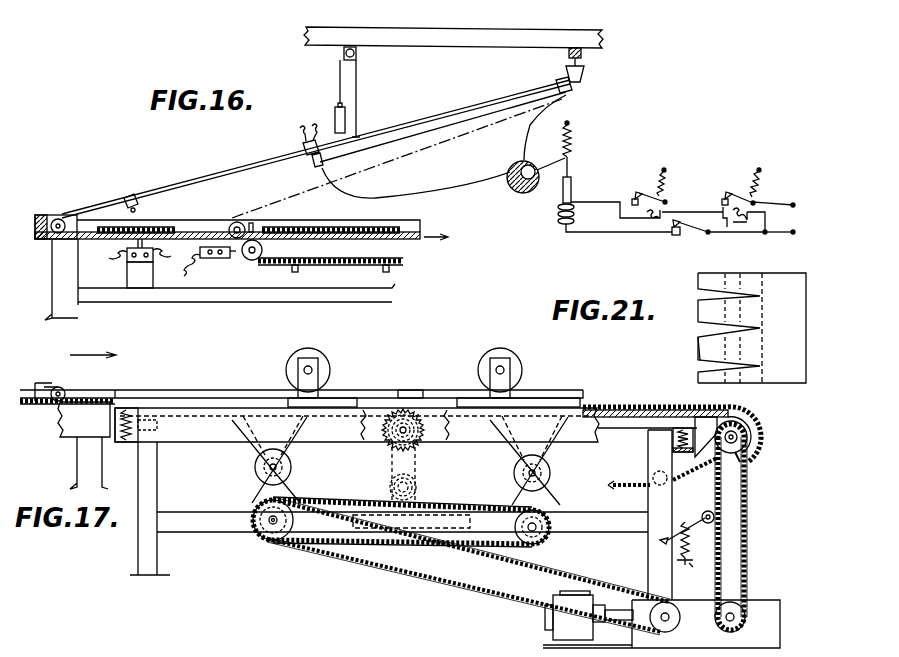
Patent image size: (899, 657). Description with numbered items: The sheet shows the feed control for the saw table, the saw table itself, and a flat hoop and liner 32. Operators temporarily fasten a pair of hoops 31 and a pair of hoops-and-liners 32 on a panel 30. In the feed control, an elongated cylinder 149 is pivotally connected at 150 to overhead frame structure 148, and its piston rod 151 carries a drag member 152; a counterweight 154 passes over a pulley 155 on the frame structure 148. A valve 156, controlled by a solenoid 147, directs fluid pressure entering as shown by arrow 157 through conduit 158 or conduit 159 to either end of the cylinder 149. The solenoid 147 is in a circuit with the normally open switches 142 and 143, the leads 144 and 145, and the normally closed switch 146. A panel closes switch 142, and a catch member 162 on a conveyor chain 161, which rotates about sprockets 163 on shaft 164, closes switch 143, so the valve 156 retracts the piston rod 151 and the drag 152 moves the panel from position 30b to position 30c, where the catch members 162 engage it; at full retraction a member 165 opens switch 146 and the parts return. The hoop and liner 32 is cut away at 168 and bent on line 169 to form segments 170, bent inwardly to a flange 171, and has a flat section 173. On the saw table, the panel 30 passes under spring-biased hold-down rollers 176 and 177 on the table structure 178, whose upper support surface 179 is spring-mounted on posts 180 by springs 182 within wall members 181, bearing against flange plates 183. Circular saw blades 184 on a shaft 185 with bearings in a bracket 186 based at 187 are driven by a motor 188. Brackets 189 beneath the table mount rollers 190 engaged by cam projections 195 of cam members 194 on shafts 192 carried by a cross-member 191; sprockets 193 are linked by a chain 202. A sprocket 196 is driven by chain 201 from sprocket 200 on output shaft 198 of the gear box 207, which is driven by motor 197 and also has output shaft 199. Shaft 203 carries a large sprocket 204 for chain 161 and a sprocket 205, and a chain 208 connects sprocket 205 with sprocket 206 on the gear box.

In FIG. 16, the overhead frame structure 148 is at (518, 40).
In FIG. 16, the pulley 155 is at (343, 50).
In FIG. 16, the counterweight 154 is at (334, 112).
In FIG. 16, the piston rod 151 is at (235, 172).
In FIG. 16, the pivotal connection 150 is at (577, 86).
In FIG. 16, the switch 146 is at (303, 147).
In FIG. 16, the elongated cylinder 149 is at (470, 108).
In FIG. 16, the conduit 159 is at (405, 192).
In FIG. 16, the conduit 158 is at (528, 140).
In FIG. 16, the valve 156 is at (517, 193).
In FIG. 16, the fluid pressure source arrow 157 is at (551, 203).
In FIG. 16, the solenoid 147 is at (562, 231).
In FIG. 16, the switch 143 is at (641, 191).
In FIG. 16, the switch 142 is at (728, 192).
In FIG. 16, the lead 144 is at (790, 205).
In FIG. 16, the lead 145 is at (765, 233).
In FIG. 16, the drag member 152 is at (70, 215).
In FIG. 16, the member 165 is at (131, 198).
In FIG. 16, the panel position 30b is at (160, 228).
In FIG. 16, the panel position 30c is at (298, 230).
In FIG. 16, the shaft 164 is at (252, 261).
In FIG. 16, the sprockets 163 is at (276, 258).
In FIG. 16, the catch members 162 is at (296, 271).
In FIG. 17, the catch members 162 is at (38, 385).
In FIG. 16, the conveyor chains 161 is at (341, 268).
In FIG. 21, the conveyor chains 161 is at (790, 378).
In FIG. 17, the conveyor chains 161 is at (40, 405).
In FIG. 21, the cut away portion 168 is at (748, 323).
In FIG. 21, the bend line 169 is at (758, 352).
In FIG. 21, the flat section 173 is at (700, 337).
In FIG. 21, the hoop and liner 32 is at (698, 352).
In FIG. 17, the hoop and liner 32 is at (57, 388).
In FIG. 21, the flange 171 is at (735, 358).
In FIG. 21, the segments 170 is at (748, 372).
In FIG. 17, the panel 30 is at (128, 390).
In FIG. 17, the hoops 31 is at (170, 390).
In FIG. 17, the table structure 178 is at (190, 432).
In FIG. 17, the upper support surface 179 is at (602, 440).
In FIG. 17, the posts 180 is at (158, 492).
In FIG. 17, the cross-member 191 is at (190, 533).
In FIG. 17, the hold-down roller 176 is at (320, 360).
In FIG. 17, the hold-down roller 177 is at (510, 358).
In FIG. 17, the shaft 185 is at (401, 432).
In FIG. 17, the bracket 186 is at (390, 468).
In FIG. 17, the motor 188 is at (392, 487).
In FIG. 17, the circular saw blades 184 is at (432, 444).
In FIG. 17, the brackets 189 is at (260, 446).
In FIG. 17, the roller 190 is at (258, 476).
In FIG. 17, the cam projections 195 is at (262, 492).
In FIG. 17, the base 187 is at (471, 483).
In FIG. 17, the cam members 194 is at (250, 505).
In FIG. 17, the shafts 192 is at (265, 542).
In FIG. 17, the sprockets 193 is at (546, 525).
In FIG. 17, the chain 202 is at (505, 546).
In FIG. 17, the sprocket 196 is at (290, 538).
In FIG. 17, the chain 201 is at (478, 580).
In FIG. 17, the motor 197 is at (560, 612).
In FIG. 17, the sprocket 200 is at (636, 601).
In FIG. 17, the output shaft 198 is at (668, 632).
In FIG. 17, the output shaft 199 is at (737, 630).
In FIG. 17, the chain 208 is at (746, 513).
In FIG. 17, the shaft 203 is at (752, 437).
In FIG. 17, the sprocket 205 is at (739, 453).
In FIG. 17, the sprocket 206 is at (736, 601).
In FIG. 17, the gear box 207 is at (698, 612).
In FIG. 17, the large sprocket 204 is at (698, 417).
In FIG. 17, the flange plates 183 is at (660, 428).
In FIG. 17, the springs 182 is at (672, 443).
In FIG. 17, the members 181 is at (677, 479).